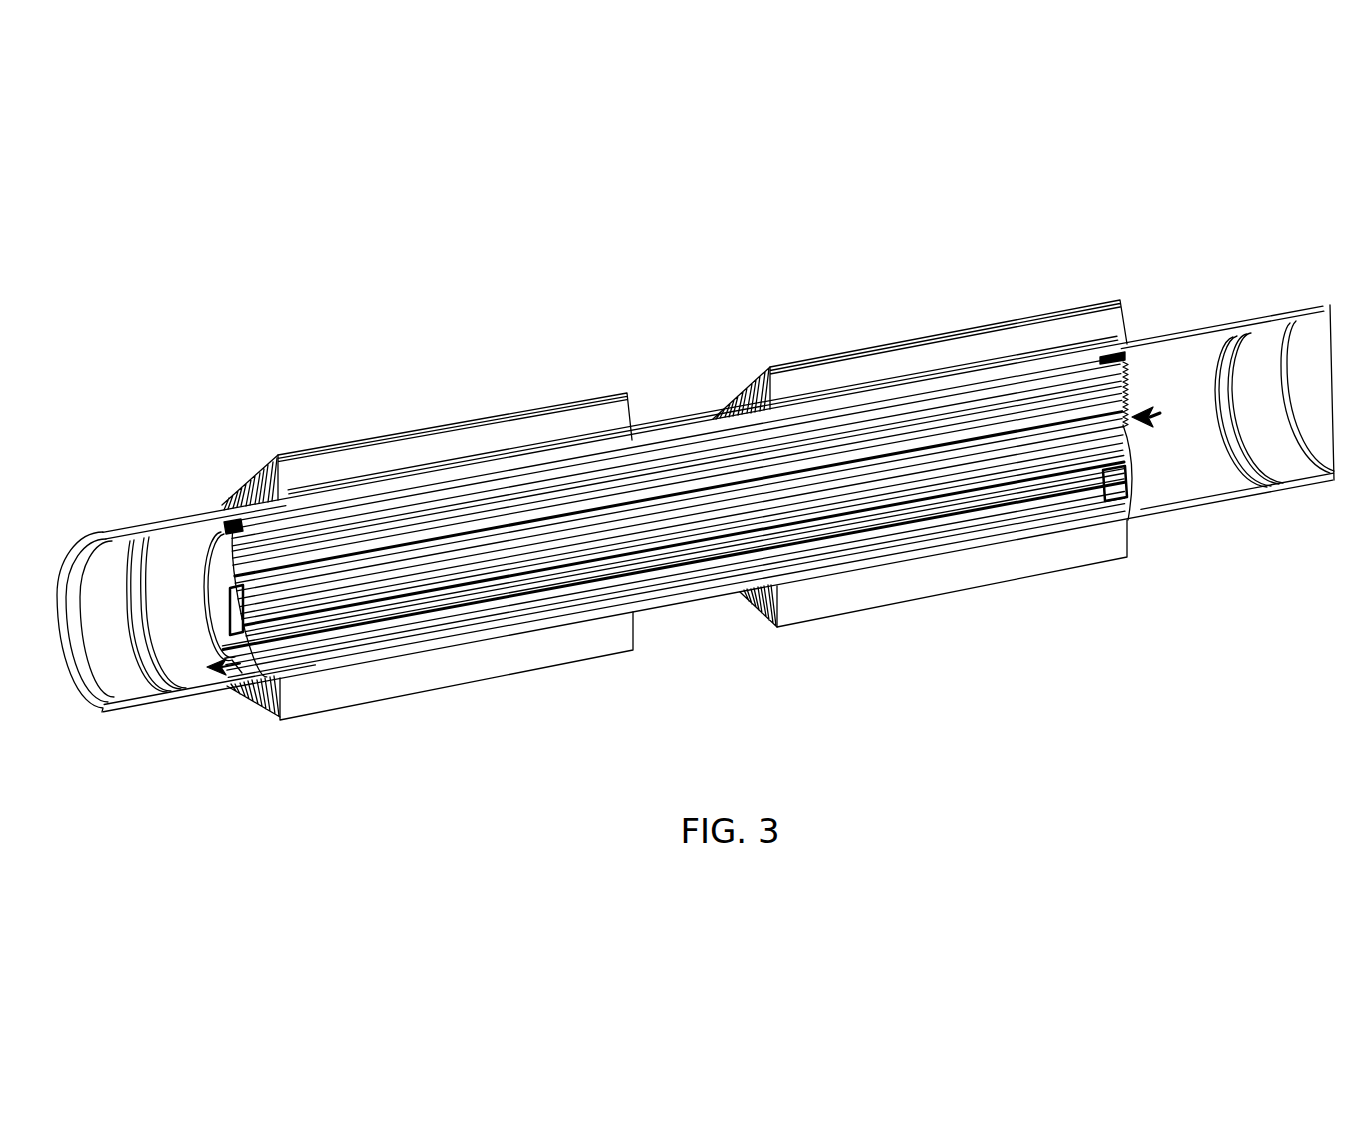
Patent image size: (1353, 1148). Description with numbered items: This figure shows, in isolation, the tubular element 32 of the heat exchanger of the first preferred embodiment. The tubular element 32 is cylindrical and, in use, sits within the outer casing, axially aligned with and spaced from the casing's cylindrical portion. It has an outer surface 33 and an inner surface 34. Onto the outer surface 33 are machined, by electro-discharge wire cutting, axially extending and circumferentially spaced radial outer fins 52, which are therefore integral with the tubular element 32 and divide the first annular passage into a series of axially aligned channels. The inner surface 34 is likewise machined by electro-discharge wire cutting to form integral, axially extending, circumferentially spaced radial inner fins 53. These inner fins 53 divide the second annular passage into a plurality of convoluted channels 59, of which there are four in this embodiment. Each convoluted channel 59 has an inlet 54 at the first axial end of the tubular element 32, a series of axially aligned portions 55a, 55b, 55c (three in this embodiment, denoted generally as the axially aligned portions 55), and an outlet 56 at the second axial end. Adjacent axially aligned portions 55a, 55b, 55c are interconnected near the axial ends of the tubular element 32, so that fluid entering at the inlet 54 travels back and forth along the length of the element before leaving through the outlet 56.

The tubular element 32 is at (1088, 248).
The outer surface 33 is at (993, 540).
The inner surface 34 is at (1080, 520).
The radial outer fins 52 is at (740, 368).
The radial inner fins 53 is at (465, 593).
The inlet 54 is at (1127, 401).
The axially aligned portions 55 is at (665, 513).
The first axially aligned portion 55a is at (1140, 437).
The second axially aligned portion 55b is at (1143, 472).
The third axially aligned portion 55c is at (1145, 500).
The outlet 56 is at (237, 675).
The convoluted channel 59 is at (233, 611).